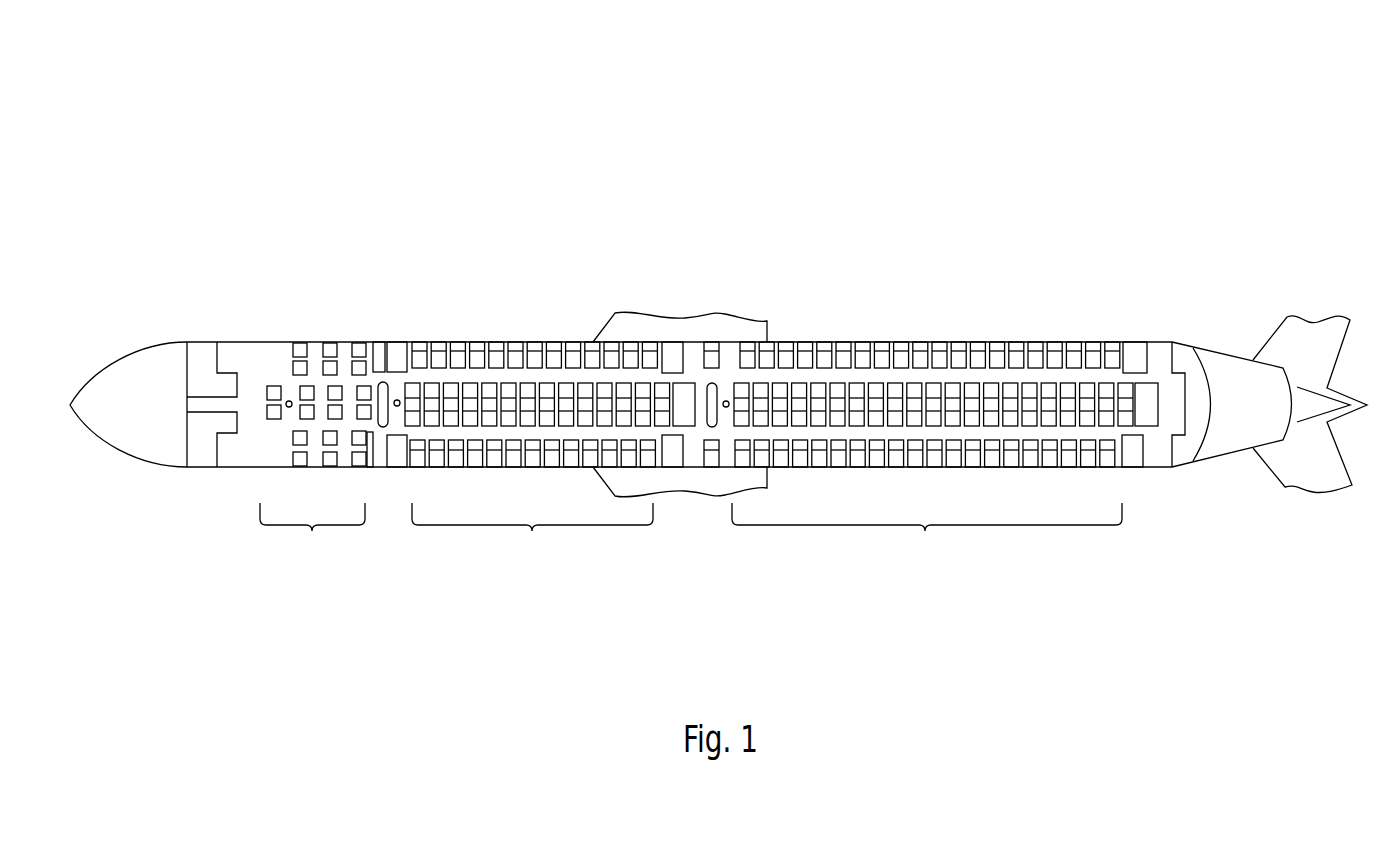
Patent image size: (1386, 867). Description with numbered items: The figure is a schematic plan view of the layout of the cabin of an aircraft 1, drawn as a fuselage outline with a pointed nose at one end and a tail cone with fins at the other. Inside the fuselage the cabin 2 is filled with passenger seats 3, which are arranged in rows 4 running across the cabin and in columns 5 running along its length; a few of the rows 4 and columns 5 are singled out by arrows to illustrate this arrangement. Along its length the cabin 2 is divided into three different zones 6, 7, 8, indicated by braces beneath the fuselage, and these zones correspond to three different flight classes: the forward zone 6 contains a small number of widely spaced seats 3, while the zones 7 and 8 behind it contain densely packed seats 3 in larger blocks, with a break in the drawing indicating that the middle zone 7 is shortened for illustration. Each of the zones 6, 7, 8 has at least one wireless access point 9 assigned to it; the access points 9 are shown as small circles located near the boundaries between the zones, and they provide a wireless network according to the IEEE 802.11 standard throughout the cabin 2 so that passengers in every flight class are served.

The aircraft 1 is at (1207, 190).
The cabin 2 is at (1090, 326).
The seats 3 is at (325, 350).
The rows 4 is at (804, 328).
The columns 5 is at (254, 412).
The zone 6 is at (312, 531).
The zone 7 is at (532, 531).
The zone 8 is at (925, 531).
The wireless access point 9 is at (288, 401).